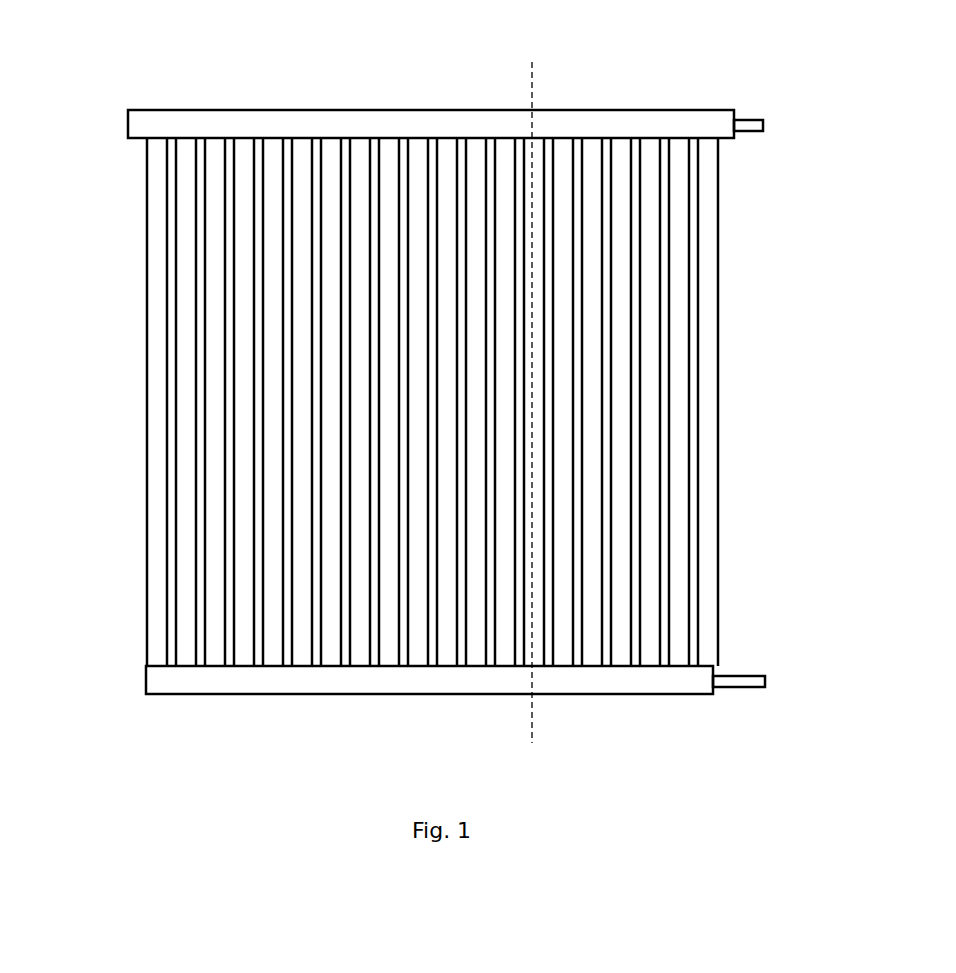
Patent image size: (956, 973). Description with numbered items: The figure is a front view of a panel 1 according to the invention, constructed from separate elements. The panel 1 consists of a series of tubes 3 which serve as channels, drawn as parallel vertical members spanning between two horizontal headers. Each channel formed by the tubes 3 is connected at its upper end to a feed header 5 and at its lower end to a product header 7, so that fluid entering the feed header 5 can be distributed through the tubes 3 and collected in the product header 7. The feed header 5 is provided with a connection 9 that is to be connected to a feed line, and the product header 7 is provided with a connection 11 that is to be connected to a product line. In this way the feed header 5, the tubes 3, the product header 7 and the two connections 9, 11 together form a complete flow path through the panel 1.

The panel 1 is at (413, 79).
The tubes 3 is at (190, 406).
The feed header 5 is at (155, 123).
The product header 7 is at (314, 683).
The connection 9 is at (752, 123).
The connection 11 is at (755, 674).